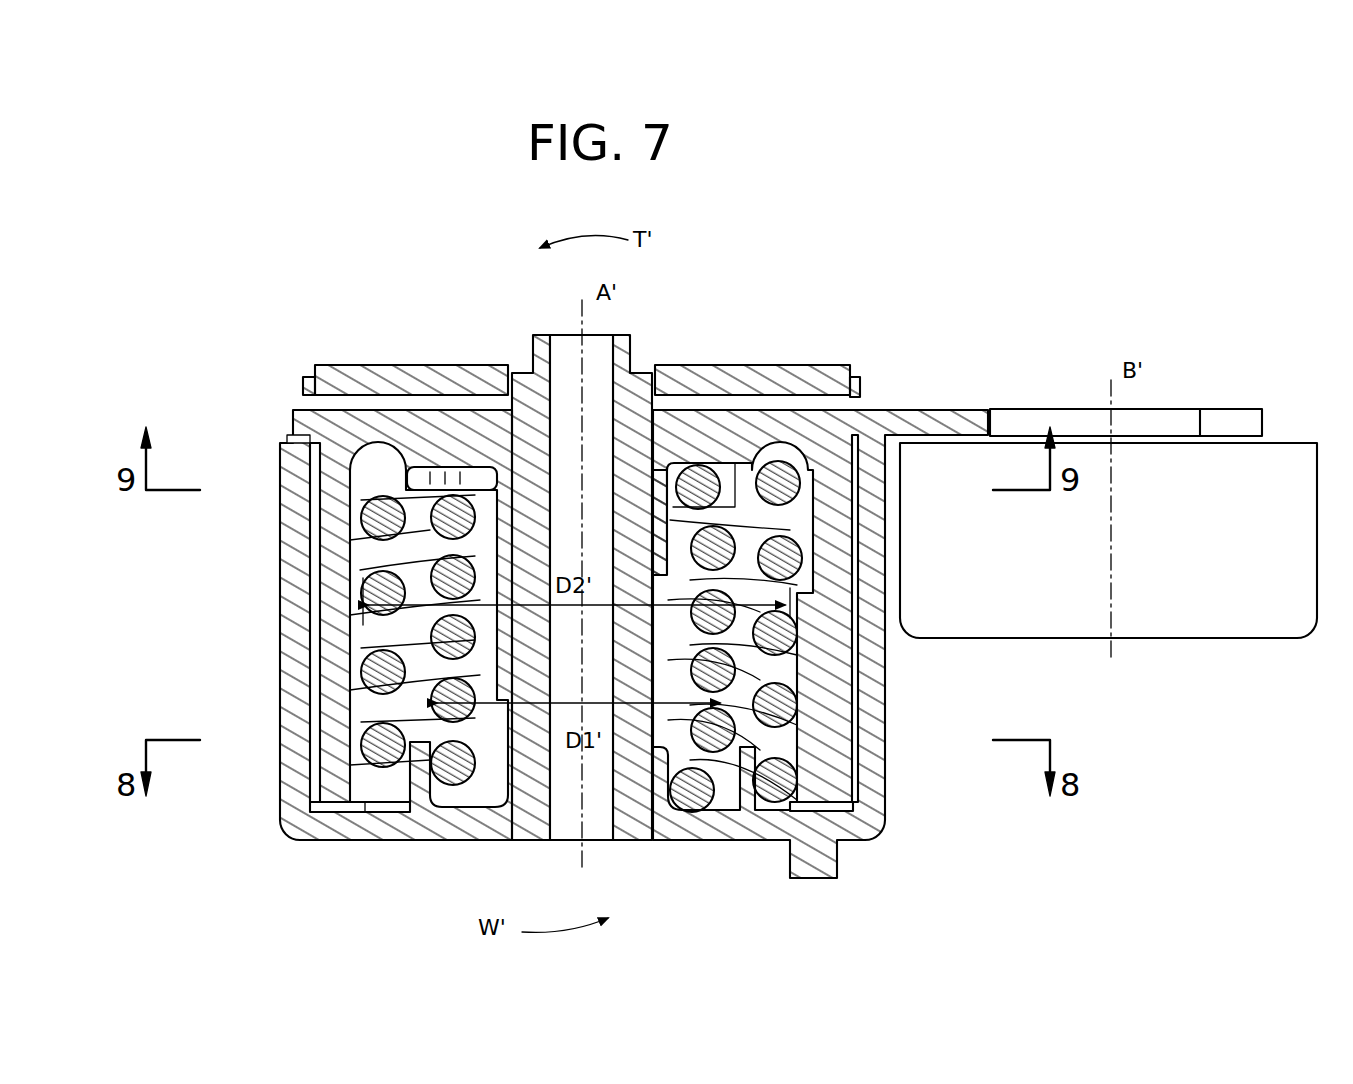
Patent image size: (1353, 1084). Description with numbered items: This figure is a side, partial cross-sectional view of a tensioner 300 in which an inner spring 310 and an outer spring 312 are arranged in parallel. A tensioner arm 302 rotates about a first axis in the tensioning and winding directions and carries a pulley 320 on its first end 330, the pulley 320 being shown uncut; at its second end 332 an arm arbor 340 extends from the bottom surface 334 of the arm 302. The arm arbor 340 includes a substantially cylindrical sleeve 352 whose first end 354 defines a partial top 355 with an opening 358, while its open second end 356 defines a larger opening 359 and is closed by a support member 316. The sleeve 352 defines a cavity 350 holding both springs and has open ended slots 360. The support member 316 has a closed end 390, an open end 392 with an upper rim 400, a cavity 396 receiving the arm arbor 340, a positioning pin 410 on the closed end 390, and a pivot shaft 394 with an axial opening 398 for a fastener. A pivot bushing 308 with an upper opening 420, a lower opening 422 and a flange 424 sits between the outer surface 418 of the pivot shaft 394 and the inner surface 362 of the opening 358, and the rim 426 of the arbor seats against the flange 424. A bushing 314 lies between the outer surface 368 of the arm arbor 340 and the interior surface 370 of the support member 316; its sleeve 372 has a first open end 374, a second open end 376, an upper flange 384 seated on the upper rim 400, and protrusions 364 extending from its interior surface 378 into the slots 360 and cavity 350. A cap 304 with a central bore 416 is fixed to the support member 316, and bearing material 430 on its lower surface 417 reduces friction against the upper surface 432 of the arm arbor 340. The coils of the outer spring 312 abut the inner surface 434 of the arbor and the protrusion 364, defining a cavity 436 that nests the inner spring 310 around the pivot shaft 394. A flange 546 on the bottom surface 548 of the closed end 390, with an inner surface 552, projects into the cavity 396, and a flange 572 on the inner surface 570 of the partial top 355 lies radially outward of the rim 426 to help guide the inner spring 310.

The tensioner 300 is at (915, 240).
The tensioner arm 302 is at (960, 425).
The cap 304 is at (740, 385).
The pivot bushing 308 is at (672, 432).
The inner spring 310 is at (345, 545).
The outer spring 312 is at (357, 588).
The bushing 314 is at (820, 640).
The support member 316 is at (880, 705).
The pulley 320 is at (1190, 620).
The first end 330 is at (1215, 425).
The second end 332 is at (300, 430).
The bottom surface 334 is at (303, 440).
The arm arbor 340 is at (300, 700).
The cavity 350 is at (865, 480).
The sleeve 352 is at (330, 520).
The first end 354 is at (440, 385).
The partial top 355 is at (760, 392).
The open second end 356 is at (340, 812).
The opening 358 is at (540, 420).
The opening 359 is at (375, 812).
The slots 360 is at (830, 605).
The inner surface 362 is at (515, 440).
The protrusions 364 is at (820, 750).
The outer surface 368 is at (345, 605).
The interior surface 370 is at (330, 745).
The sleeve 372 is at (855, 500).
The first open end 374 is at (340, 445).
The second open end 376 is at (310, 812).
The interior surface 378 is at (335, 775).
The upper flange 384 is at (297, 430).
The closed end 390 is at (430, 780).
The open end 392 is at (290, 440).
The pivot shaft 394 is at (640, 375).
The cavity 396 is at (835, 805).
The opening 398 is at (600, 830).
The upper rim 400 is at (910, 415).
The positioning pin 410 is at (838, 865).
The bore 416 is at (645, 395).
The lower surface 417 is at (383, 445).
The outer surface 418 is at (530, 655).
The upper opening 420 is at (700, 385).
The lower opening 422 is at (660, 585).
The flange 424 is at (660, 520).
The rim 426 is at (735, 505).
The bearing material 430 is at (310, 378).
The upper surface 432 is at (520, 395).
The inner surface 434 is at (850, 540).
The cavity 436 is at (820, 560).
The flange 546 is at (745, 790).
The bottom surface 548 is at (805, 870).
The inner surface 552 is at (440, 800).
The inner surface 570 is at (430, 410).
The flange 572 is at (410, 478).